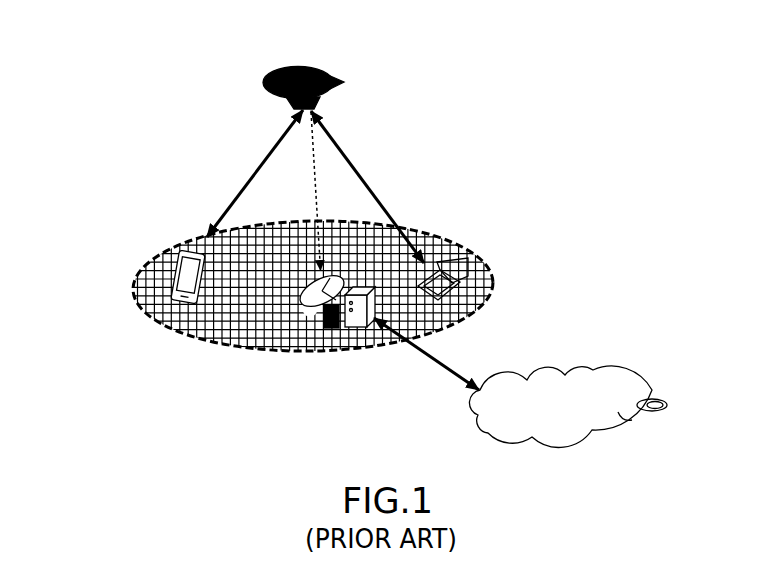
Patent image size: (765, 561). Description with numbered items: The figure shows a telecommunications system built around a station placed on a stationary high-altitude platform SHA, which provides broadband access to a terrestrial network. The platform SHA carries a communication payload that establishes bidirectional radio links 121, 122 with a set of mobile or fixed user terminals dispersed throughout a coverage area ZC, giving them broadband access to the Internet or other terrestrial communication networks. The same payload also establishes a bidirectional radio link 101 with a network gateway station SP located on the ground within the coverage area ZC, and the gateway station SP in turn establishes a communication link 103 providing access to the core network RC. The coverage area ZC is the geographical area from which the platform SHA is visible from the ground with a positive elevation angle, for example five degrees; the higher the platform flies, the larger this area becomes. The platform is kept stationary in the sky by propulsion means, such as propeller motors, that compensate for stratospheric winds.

The stationary high-altitude platform SHA is at (293, 66).
The bidirectional radio link 121 is at (255, 166).
The bidirectional radio link 122 is at (365, 175).
The bidirectional radio link 101 is at (305, 176).
The coverage area ZC is at (213, 349).
The network gateway station SP is at (326, 330).
The communication link 103 is at (408, 356).
The core network RC is at (575, 365).